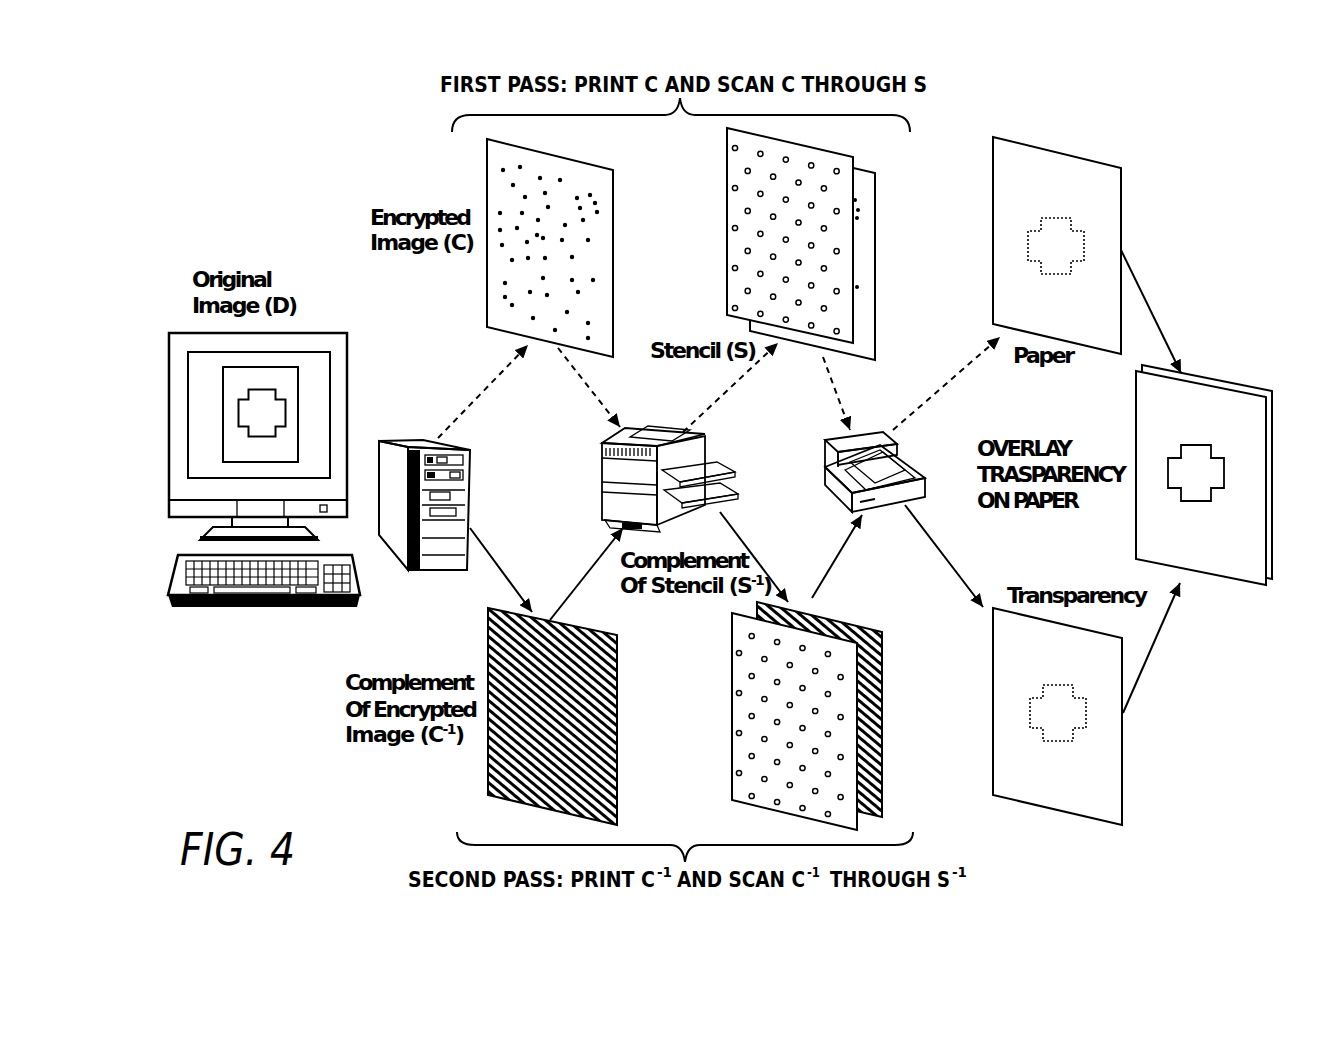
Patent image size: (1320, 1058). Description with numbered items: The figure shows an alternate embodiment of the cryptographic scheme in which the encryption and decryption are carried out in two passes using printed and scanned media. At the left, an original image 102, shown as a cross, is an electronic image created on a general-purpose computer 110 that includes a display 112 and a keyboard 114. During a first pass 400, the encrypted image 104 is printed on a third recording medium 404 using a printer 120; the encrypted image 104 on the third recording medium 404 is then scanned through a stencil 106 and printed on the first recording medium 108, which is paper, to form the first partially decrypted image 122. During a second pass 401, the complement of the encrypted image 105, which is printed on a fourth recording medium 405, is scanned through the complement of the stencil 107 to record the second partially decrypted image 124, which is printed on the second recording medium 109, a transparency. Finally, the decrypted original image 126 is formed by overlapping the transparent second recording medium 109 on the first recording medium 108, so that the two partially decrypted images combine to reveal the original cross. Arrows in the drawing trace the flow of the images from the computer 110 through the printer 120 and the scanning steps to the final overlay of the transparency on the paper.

The original image 102 is at (285, 410).
The encrypted image 104 is at (587, 158).
The complement of the encrypted image 105 is at (617, 735).
The stencil 106 is at (727, 242).
The complement of the stencil 107 is at (732, 670).
The first recording medium 108 is at (1080, 157).
The second recording medium 109 is at (1134, 418).
The general-purpose computer 110 is at (463, 448).
The display 112 is at (285, 421).
The keyboard 114 is at (258, 607).
The printer 120 is at (707, 447).
The first partially decrypted image 122 is at (1056, 220).
The second partially decrypted image 124 is at (1057, 688).
The decrypted original image 126 is at (1199, 447).
The first pass 400 is at (907, 120).
The second pass 401 is at (912, 840).
The third recording medium 404 is at (875, 180).
The fourth recording medium 405 is at (868, 626).